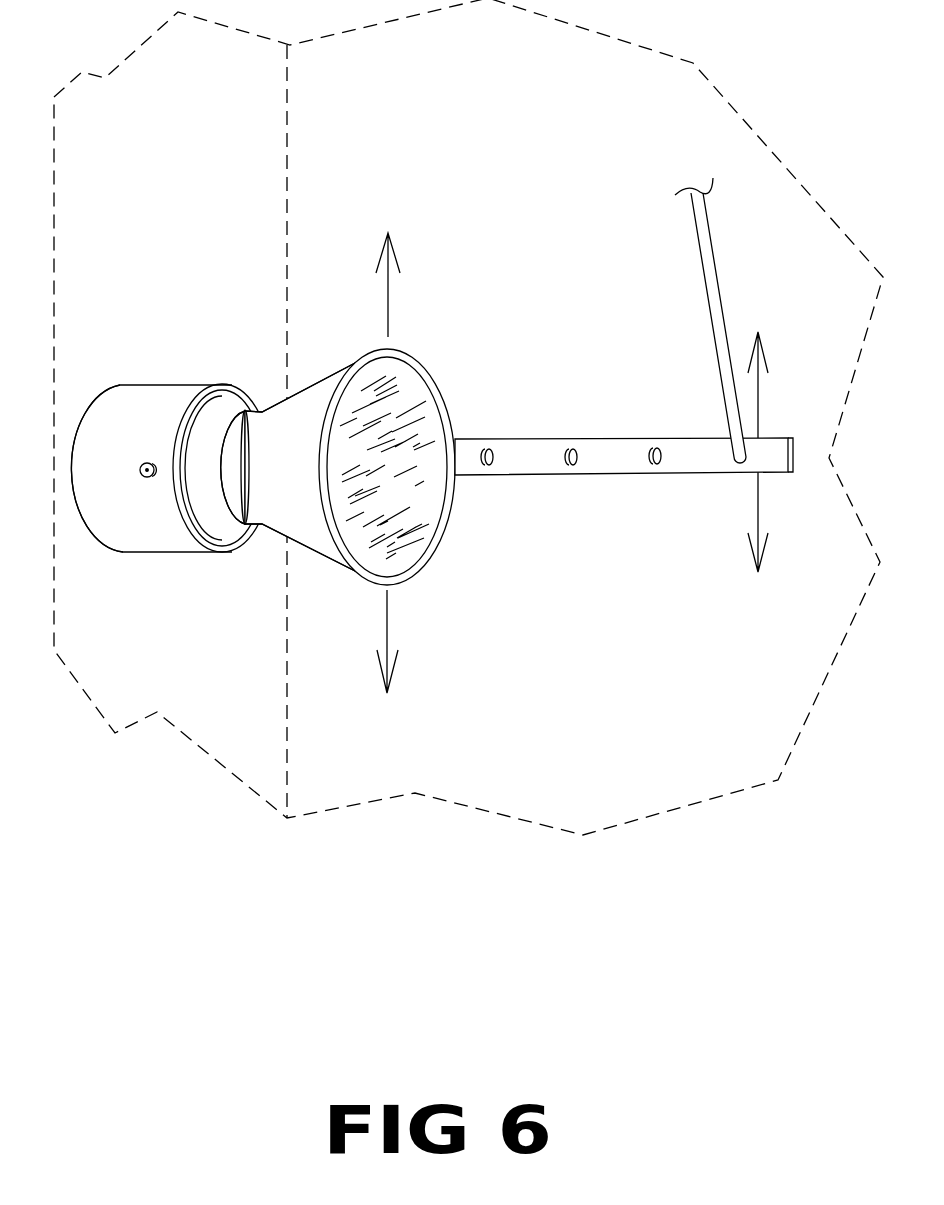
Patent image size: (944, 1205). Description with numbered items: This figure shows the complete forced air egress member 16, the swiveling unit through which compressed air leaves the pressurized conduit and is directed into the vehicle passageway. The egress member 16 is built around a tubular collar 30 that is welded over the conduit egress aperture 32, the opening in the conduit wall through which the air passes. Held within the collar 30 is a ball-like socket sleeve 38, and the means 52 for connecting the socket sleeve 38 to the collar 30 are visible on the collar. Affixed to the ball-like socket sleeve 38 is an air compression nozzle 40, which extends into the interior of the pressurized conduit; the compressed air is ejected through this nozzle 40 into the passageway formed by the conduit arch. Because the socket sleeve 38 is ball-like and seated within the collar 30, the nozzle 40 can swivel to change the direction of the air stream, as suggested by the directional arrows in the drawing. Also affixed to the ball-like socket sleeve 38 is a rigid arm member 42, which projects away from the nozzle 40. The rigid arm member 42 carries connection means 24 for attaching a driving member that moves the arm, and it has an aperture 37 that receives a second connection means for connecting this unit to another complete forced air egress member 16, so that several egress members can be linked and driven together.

The forced air egress member 16 is at (165, 650).
The connection means 24 is at (710, 262).
The tubular collar 30 is at (123, 410).
The conduit egress aperture 32 is at (83, 518).
The aperture 37 is at (655, 452).
The ball-like socket sleeve 38 is at (222, 530).
The air compression nozzle 40 is at (320, 393).
The rigid arm member 42 is at (533, 453).
The means for connecting socket to collar 52 is at (147, 463).